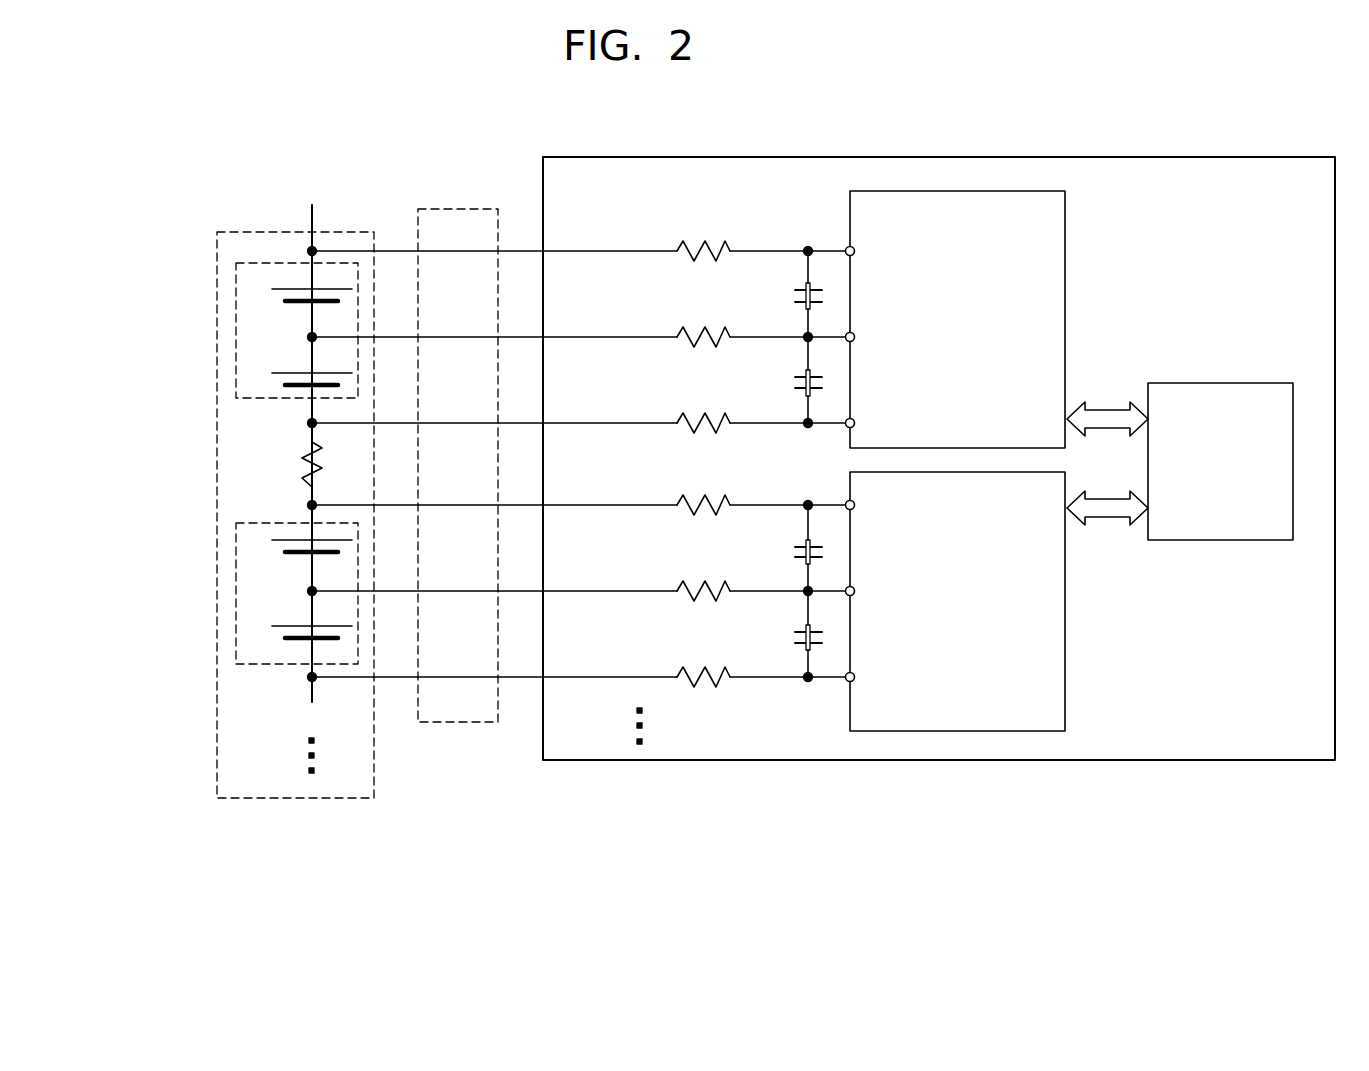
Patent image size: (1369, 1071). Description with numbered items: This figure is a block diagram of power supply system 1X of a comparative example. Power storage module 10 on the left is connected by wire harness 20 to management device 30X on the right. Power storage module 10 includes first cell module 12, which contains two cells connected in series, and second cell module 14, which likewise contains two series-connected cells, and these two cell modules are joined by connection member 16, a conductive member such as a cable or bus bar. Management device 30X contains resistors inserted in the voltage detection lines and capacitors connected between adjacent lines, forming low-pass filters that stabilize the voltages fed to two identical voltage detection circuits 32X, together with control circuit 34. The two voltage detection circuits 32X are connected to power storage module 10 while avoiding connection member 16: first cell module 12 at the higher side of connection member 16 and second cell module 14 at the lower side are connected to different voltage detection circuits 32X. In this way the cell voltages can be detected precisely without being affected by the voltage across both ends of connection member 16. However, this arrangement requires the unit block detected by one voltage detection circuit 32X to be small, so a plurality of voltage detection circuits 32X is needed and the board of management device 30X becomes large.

The power supply system 1X is at (846, 868).
The power storage module 10 is at (217, 232).
The first cell module 12 is at (237, 398).
The second cell module 14 is at (237, 523).
The connection member 16 is at (305, 462).
The wire harness 20 is at (433, 209).
The management device 30X is at (1295, 157).
The voltage detection circuit 32X is at (1065, 204).
The control circuit 34 is at (1222, 383).